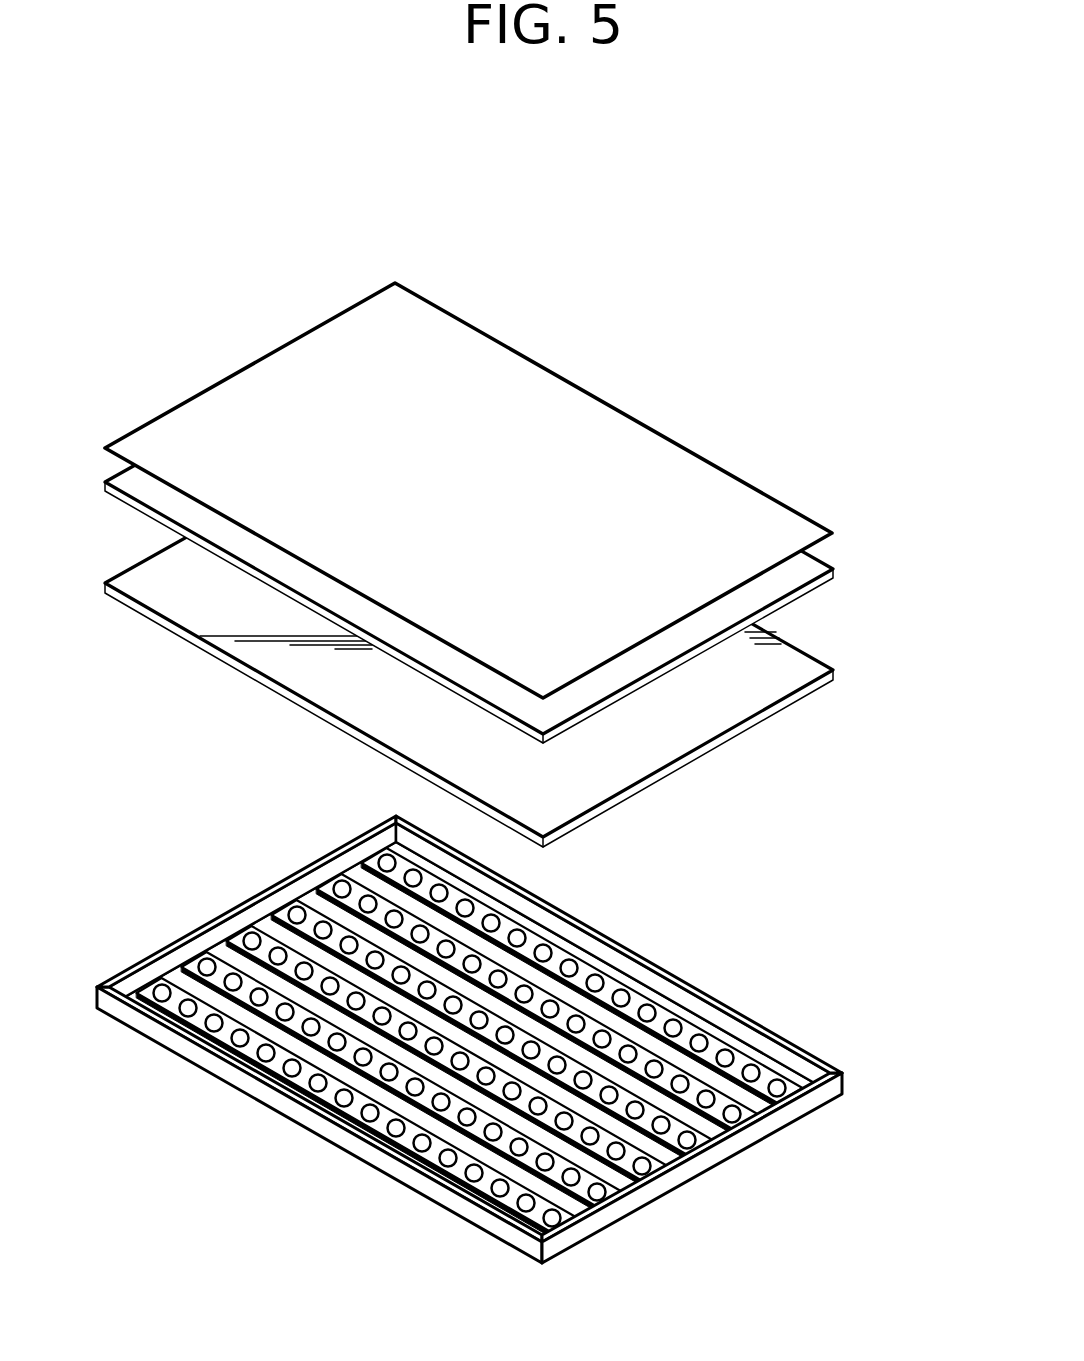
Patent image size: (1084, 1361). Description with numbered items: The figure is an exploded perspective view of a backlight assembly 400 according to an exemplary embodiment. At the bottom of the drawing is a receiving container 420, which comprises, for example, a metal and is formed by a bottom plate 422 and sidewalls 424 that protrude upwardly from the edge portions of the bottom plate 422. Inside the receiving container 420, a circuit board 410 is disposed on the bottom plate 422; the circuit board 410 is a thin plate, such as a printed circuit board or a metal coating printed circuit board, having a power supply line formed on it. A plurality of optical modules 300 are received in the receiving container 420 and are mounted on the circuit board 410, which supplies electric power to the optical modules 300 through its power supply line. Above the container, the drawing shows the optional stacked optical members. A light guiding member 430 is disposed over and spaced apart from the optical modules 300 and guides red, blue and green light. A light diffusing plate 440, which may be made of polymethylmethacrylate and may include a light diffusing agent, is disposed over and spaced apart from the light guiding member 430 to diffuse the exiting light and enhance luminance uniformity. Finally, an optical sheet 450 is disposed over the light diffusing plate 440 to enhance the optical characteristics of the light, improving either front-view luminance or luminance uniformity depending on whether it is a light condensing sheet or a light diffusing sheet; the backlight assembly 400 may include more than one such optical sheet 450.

The backlight assembly 400 is at (576, 301).
The optical sheet 450 is at (822, 530).
The light diffusing plate 440 is at (822, 566).
The light guiding member 430 is at (822, 667).
The receiving container 420 is at (469, 1038).
The circuit board 410 is at (692, 1028).
The optical modules 300 is at (676, 1024).
The sidewalls 424 is at (441, 1194).
The bottom plate 422 is at (570, 1202).